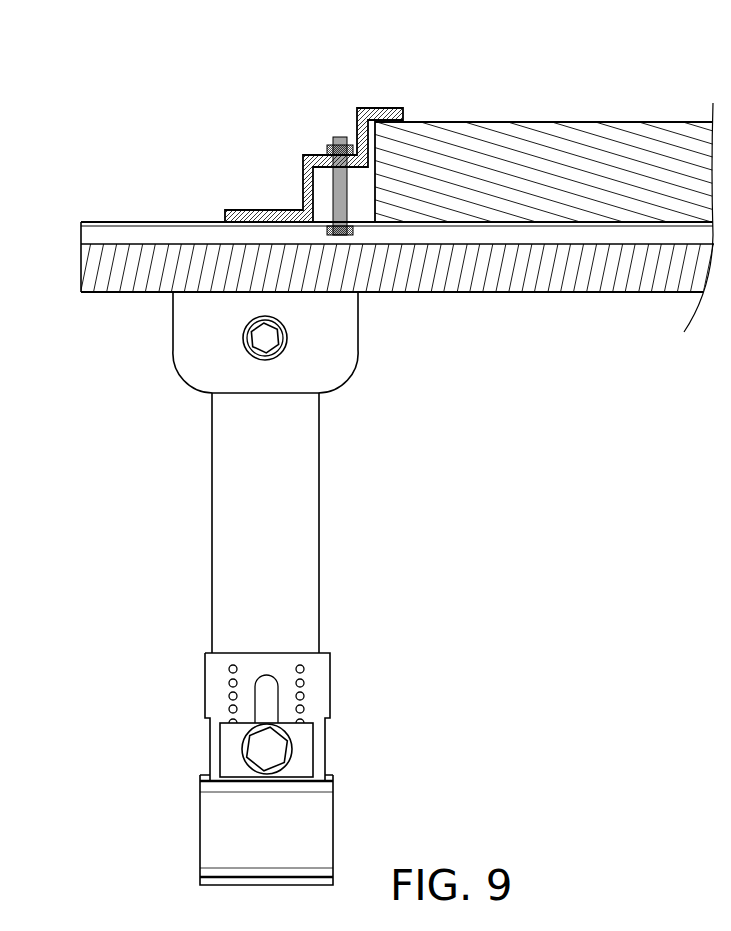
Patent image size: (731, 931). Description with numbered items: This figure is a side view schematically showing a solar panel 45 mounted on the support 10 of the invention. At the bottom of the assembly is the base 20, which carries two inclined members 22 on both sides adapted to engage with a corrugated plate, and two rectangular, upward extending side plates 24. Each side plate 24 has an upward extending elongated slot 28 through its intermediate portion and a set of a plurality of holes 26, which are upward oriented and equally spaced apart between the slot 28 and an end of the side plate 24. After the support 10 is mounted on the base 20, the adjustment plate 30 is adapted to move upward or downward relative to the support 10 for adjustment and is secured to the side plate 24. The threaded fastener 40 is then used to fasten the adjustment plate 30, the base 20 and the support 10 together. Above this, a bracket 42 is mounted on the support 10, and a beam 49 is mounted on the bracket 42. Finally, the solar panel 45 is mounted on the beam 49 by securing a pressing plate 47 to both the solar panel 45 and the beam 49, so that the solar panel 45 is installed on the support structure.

The support 10 is at (361, 502).
The base 20 is at (286, 825).
The inclined member 22 is at (213, 825).
The side plate 24 is at (218, 689).
The holes 26 is at (231, 665).
The elongated slot 28 is at (266, 676).
The adjustment plate 30 is at (228, 735).
The threaded fastener 40 is at (270, 740).
The bracket 42 is at (358, 341).
The solar panel 45 is at (510, 97).
The pressing plate 47 is at (357, 108).
The beam 49 is at (141, 222).